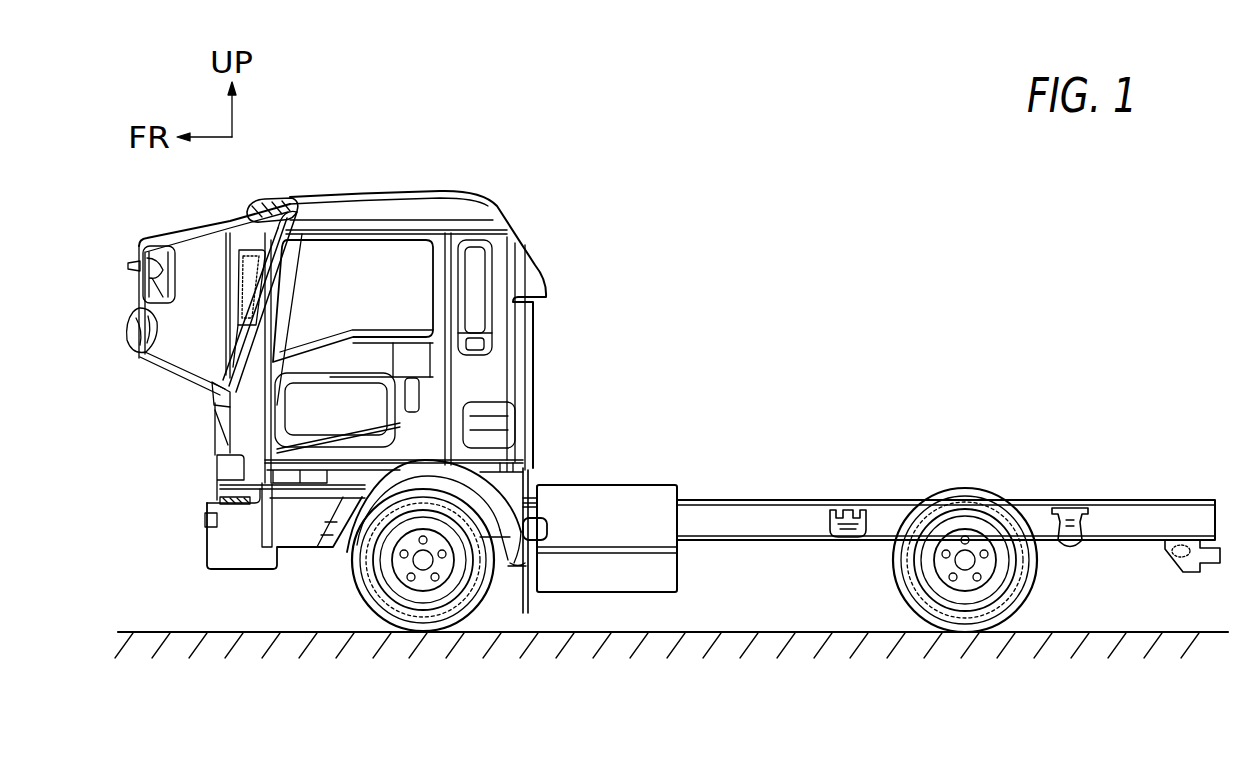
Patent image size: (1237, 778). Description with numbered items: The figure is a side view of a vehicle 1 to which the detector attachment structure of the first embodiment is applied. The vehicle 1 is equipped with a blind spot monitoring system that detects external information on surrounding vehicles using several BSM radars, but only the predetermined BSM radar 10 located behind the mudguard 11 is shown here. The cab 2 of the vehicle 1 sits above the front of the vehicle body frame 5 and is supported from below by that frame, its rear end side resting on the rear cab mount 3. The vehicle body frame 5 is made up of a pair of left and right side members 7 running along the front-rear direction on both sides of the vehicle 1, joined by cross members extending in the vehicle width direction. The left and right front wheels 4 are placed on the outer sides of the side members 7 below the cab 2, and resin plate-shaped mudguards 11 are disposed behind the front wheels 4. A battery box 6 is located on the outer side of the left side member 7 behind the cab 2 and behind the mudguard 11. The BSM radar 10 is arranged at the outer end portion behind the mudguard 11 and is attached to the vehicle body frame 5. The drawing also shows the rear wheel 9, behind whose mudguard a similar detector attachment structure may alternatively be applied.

The vehicle 1 is at (760, 165).
The cab 2 is at (436, 186).
The rear cab mount 3 is at (528, 464).
The front wheel 4 is at (360, 575).
The vehicle body frame 5 is at (737, 499).
The battery box 6 is at (628, 485).
The side member 7 is at (838, 500).
The rear wheel 9 is at (988, 497).
The BSM radar 10 is at (553, 524).
The mudguard 11 is at (516, 568).